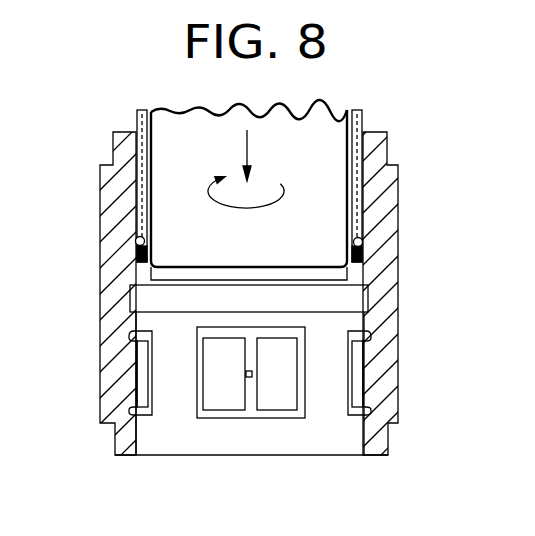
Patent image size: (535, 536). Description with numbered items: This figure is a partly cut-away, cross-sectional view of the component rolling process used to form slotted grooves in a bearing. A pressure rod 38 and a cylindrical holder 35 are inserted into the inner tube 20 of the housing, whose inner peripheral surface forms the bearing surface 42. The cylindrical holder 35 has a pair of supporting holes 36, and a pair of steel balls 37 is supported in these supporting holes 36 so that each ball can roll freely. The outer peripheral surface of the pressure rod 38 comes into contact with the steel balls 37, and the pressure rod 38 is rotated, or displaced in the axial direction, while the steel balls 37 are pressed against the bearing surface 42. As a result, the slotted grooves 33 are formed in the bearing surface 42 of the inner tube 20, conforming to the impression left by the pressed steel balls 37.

The inner tube 20 is at (267, 268).
The slotted grooves 33 is at (253, 416).
The cylindrical holder 35 is at (384, 190).
The supporting holes 36 is at (137, 243).
The steel balls 37 is at (136, 240).
The pressure rod 38 is at (348, 113).
The bearing surface 42 is at (296, 440).